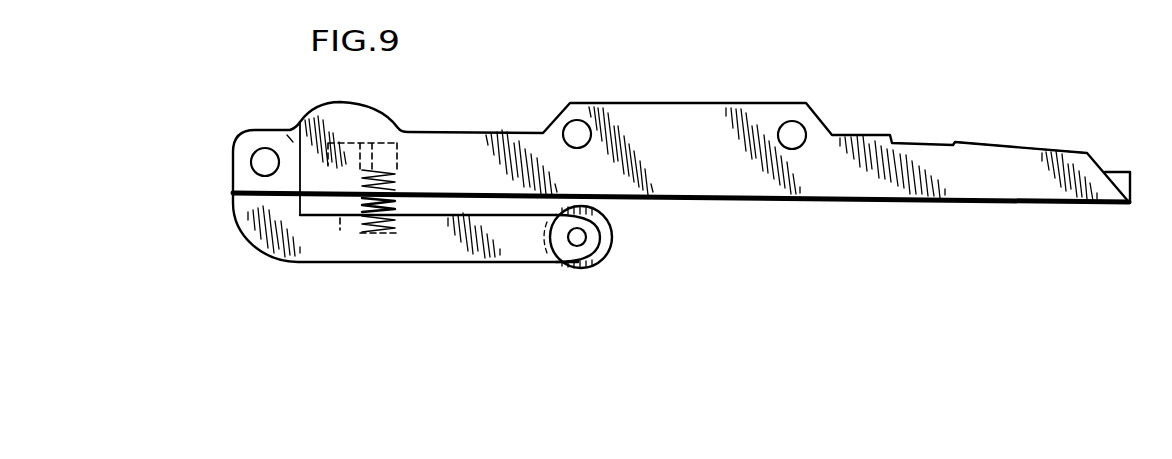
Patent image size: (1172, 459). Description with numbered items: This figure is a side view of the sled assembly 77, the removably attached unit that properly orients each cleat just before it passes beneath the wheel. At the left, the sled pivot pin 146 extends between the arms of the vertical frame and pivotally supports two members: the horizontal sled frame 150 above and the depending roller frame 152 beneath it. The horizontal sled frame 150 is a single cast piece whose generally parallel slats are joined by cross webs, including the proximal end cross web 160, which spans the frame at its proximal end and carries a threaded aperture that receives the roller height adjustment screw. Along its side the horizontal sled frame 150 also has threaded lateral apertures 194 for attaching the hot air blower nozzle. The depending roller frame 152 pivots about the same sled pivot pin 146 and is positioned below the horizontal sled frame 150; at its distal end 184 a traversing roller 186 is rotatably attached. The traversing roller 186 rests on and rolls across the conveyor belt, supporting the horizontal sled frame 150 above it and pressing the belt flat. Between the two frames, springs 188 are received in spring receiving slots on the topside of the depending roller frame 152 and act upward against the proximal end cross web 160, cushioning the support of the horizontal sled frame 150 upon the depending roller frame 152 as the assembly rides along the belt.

The sled assembly 77 is at (981, 127).
The sled pivot pin 146 is at (262, 162).
The horizontal sled frame 150 is at (500, 131).
The depending roller frame 152 is at (243, 236).
The proximal end cross web 160 is at (323, 180).
The distal end 184 is at (595, 230).
The traversing roller 186 is at (603, 255).
The springs 188 is at (395, 197).
The threaded lateral apertures 194 is at (788, 139).